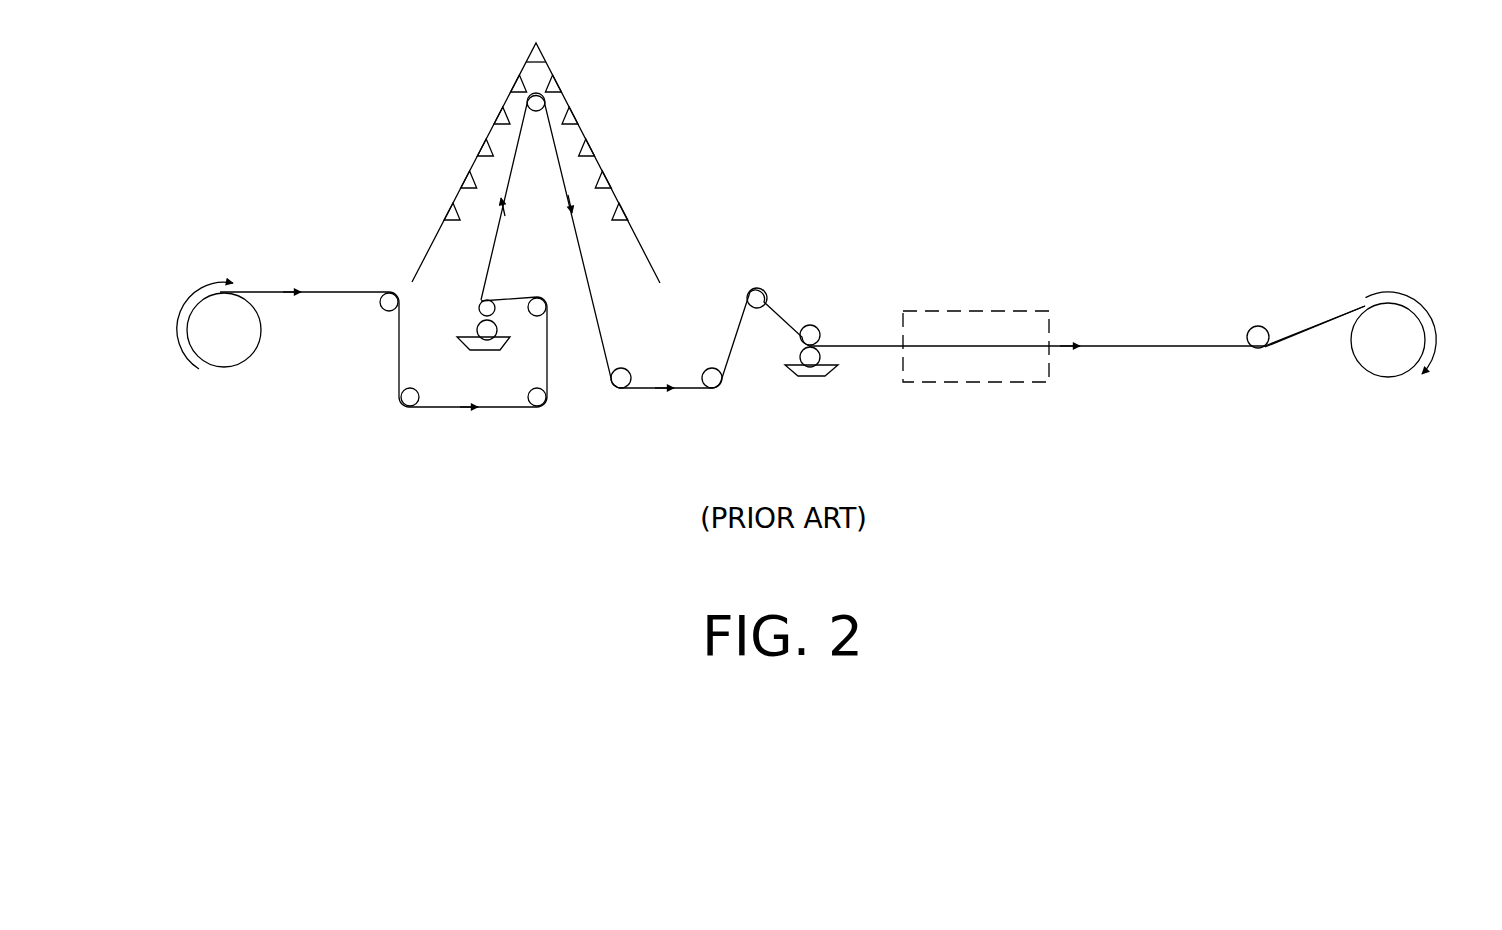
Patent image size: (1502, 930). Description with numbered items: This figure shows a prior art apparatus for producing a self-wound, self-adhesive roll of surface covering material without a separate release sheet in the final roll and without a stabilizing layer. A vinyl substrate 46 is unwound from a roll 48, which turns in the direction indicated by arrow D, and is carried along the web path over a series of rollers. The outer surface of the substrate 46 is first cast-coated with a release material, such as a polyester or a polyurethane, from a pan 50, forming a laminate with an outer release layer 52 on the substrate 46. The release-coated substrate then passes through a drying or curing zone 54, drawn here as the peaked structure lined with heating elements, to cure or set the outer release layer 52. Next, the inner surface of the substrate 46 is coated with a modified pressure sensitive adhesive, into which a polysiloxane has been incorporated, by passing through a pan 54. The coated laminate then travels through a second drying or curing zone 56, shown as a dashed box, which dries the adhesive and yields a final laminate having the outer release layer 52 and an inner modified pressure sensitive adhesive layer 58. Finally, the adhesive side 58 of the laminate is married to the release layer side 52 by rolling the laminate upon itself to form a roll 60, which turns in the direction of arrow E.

The vinyl substrate 46 is at (347, 291).
The roll 48 is at (238, 355).
The pan 50 is at (481, 352).
The outer release layer 52 is at (488, 267).
The drying or curing zone 54 is at (487, 143).
The second drying or curing zone 56 is at (952, 311).
The inner modified pressure sensitive adhesive layer 58 is at (1293, 338).
The roll 60 is at (1392, 363).
The arrow D is at (193, 295).
The arrow E is at (1417, 303).